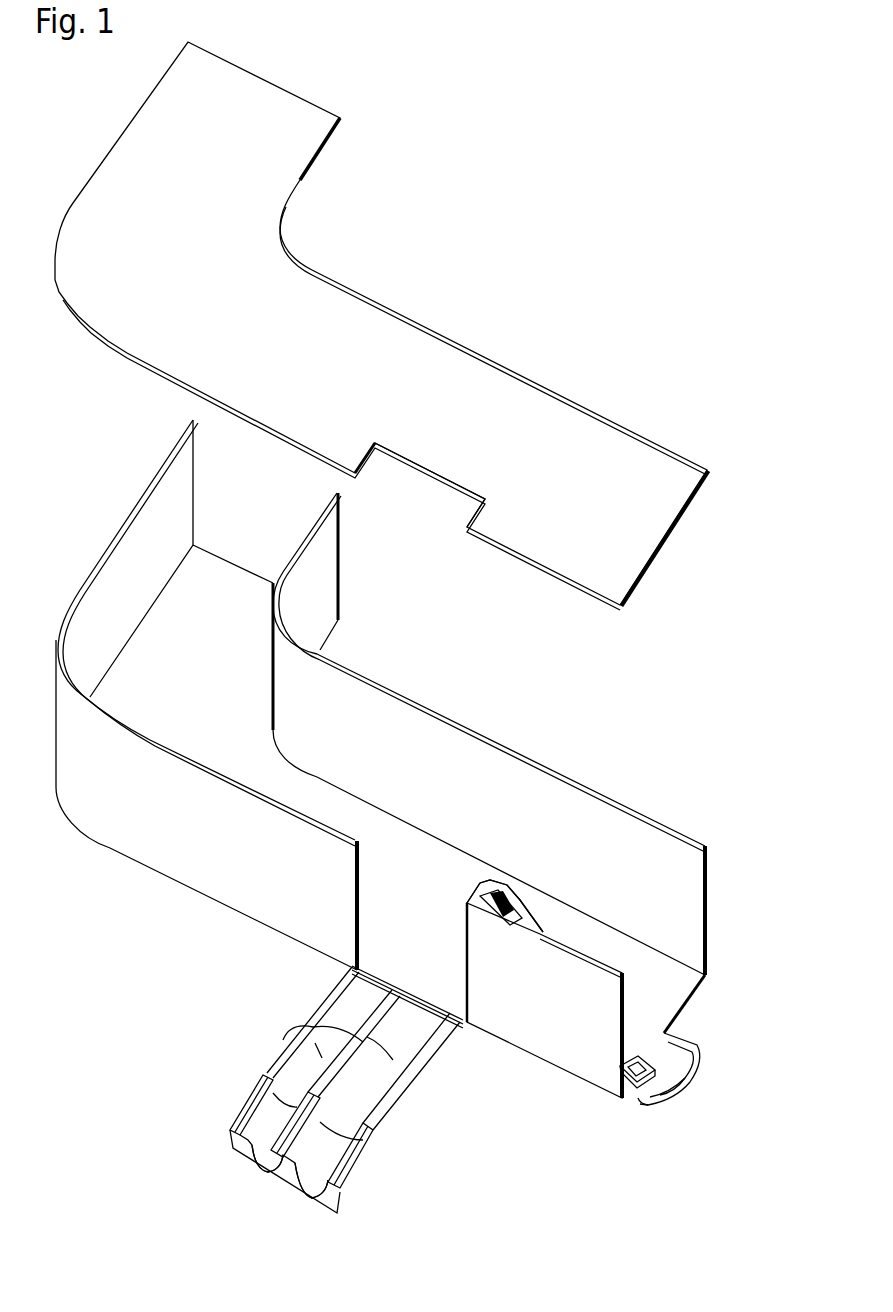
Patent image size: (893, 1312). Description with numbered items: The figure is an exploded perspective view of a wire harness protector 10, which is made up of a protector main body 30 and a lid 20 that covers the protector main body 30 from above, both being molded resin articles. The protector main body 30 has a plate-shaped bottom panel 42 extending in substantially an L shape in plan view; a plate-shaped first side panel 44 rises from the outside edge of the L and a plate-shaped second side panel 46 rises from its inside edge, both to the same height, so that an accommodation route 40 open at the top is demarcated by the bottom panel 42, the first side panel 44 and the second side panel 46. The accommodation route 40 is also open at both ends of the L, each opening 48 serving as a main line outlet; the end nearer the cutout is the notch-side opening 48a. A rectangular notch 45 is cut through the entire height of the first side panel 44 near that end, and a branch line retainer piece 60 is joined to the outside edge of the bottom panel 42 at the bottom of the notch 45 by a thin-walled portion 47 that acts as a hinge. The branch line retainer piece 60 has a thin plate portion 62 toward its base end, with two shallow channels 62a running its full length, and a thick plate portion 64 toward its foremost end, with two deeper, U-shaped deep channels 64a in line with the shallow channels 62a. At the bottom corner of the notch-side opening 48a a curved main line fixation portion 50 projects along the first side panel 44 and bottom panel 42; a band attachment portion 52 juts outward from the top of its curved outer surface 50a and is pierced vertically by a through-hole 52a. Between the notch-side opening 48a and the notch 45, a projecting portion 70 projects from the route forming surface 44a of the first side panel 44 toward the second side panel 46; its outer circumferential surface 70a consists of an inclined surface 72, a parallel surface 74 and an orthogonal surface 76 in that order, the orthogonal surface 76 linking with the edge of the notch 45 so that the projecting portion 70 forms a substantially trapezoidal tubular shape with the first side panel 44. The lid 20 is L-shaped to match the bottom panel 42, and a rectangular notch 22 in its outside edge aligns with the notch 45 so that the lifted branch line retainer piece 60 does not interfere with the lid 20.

The wire harness protector 10 is at (740, 640).
The lid 20 is at (623, 583).
The notch 22 is at (377, 460).
The protector main body 30 is at (700, 775).
The accommodation route 40 is at (662, 908).
The bottom panel 42 is at (670, 995).
The first side panel 44 is at (551, 1047).
The route forming surface 44a is at (210, 843).
The notch 45 is at (356, 893).
The second side panel 46 is at (684, 918).
The thin-walled portion 47 is at (467, 1013).
The opening 48 is at (195, 480).
The notch-side opening 48a is at (705, 940).
The main line fixation portion 50 is at (692, 1048).
The curved outer surface 50a is at (642, 1108).
The band attachment portion 52 is at (636, 1090).
The through-hole 52a is at (685, 1087).
The branch line retainer piece 60 is at (465, 1100).
The thin plate portion 62 is at (342, 1077).
The shallow channels 62a is at (290, 1035).
The thick plate portion 64 is at (352, 1183).
The deep channels 64a is at (300, 1167).
The projecting portion 70 is at (546, 909).
The outer circumferential surface 70a is at (563, 818).
The inclined surface 72 is at (538, 890).
The parallel surface 74 is at (505, 885).
The orthogonal surface 76 is at (466, 898).